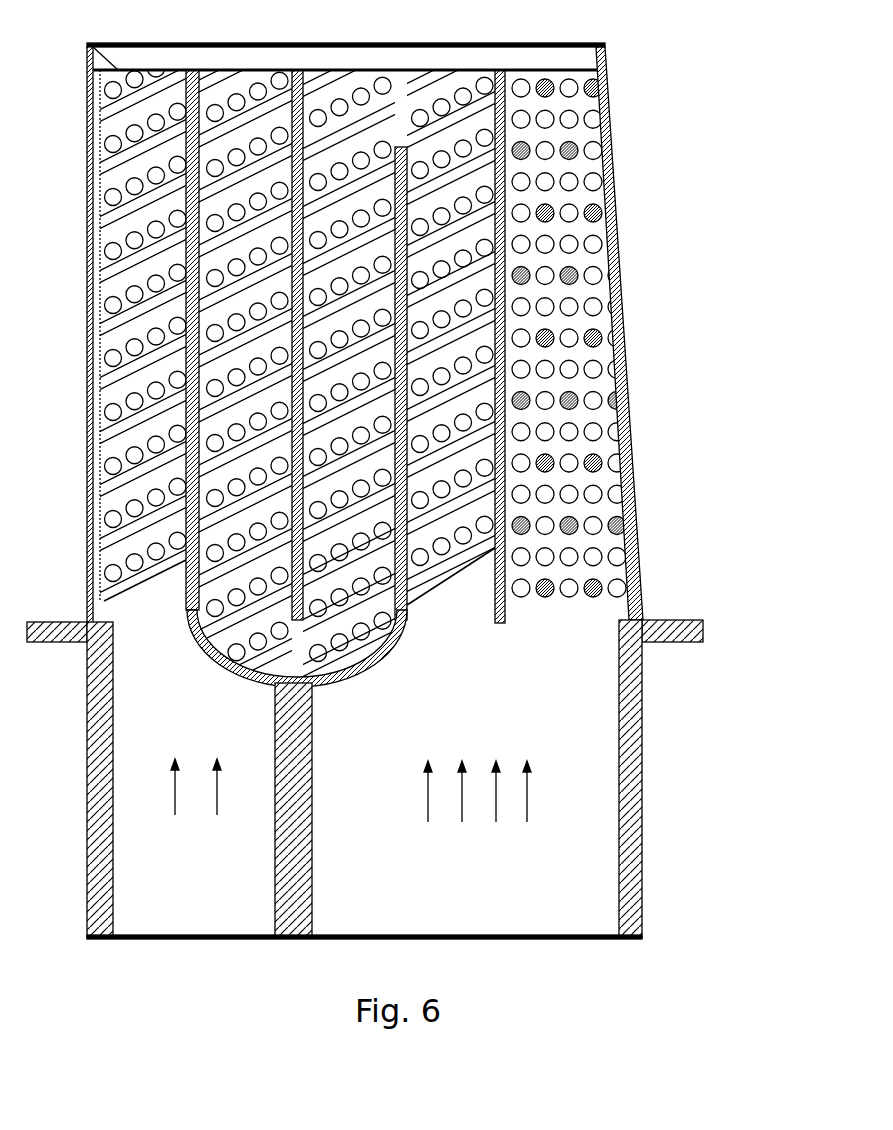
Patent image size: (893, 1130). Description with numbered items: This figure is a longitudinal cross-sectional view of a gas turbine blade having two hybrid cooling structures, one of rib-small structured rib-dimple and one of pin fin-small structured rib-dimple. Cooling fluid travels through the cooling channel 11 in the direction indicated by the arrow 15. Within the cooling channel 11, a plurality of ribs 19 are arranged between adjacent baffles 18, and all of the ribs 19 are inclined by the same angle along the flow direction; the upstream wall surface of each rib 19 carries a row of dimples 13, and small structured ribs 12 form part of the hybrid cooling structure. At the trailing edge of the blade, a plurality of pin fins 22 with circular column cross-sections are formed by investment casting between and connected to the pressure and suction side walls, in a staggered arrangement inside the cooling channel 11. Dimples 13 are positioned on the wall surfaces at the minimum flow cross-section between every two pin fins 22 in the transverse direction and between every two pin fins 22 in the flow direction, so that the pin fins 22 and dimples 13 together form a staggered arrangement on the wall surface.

The cooling channel 11 is at (622, 300).
The small structured ribs 12 is at (100, 262).
The dimples 13 is at (87, 232).
The arrow 15 is at (165, 778).
The baffles 18 is at (187, 128).
The ribs 19 is at (104, 383).
The pin fins 22 is at (633, 423).